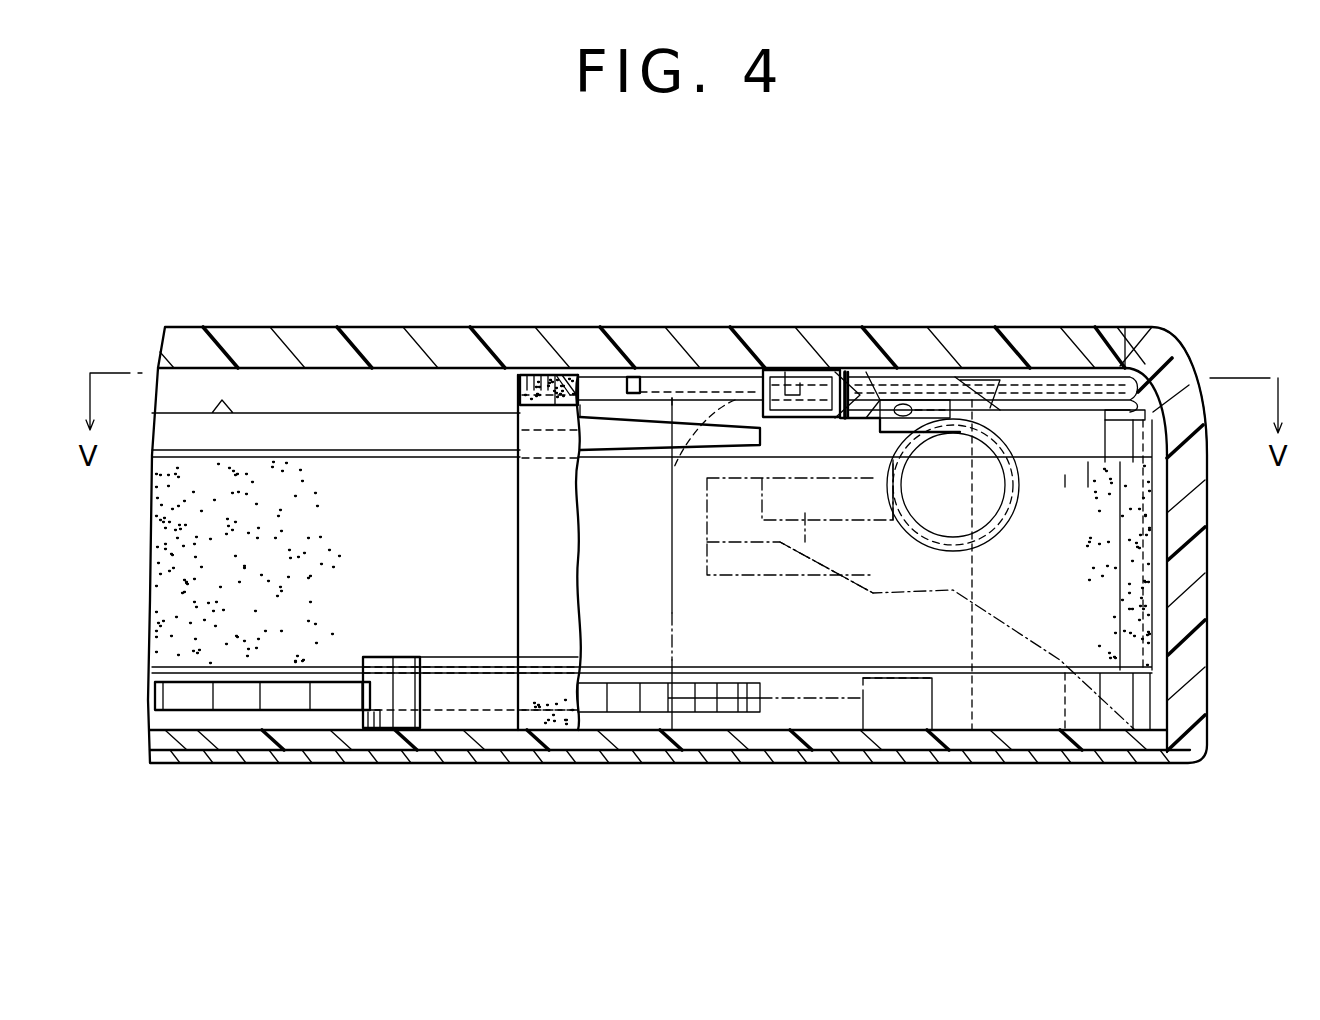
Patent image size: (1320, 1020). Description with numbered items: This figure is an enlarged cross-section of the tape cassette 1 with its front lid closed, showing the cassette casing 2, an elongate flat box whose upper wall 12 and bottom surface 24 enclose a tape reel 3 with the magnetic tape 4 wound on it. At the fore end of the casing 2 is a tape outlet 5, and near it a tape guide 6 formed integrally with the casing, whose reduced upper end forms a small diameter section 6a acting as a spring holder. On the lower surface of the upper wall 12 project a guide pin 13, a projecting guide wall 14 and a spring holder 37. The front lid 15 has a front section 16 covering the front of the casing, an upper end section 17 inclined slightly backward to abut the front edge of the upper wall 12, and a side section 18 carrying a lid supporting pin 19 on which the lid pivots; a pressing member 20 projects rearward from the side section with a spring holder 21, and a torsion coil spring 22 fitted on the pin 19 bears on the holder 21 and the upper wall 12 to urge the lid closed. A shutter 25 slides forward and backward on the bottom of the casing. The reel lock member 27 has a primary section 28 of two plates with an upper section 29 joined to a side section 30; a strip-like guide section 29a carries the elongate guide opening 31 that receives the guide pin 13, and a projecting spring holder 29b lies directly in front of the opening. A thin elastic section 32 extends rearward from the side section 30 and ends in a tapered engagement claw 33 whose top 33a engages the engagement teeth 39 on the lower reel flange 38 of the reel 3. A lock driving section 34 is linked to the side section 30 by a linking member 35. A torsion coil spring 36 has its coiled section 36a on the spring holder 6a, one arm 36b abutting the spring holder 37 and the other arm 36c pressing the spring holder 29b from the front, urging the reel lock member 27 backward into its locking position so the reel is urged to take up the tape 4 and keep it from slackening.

The apparatus housing 1 is at (1160, 239).
The cassette casing 2 is at (368, 327).
The tape reel 3 is at (268, 413).
The magnetic tape 4 is at (210, 565).
The tape outlet 5 is at (1118, 730).
The tape guide 6 is at (1150, 688).
The small diameter section 6a is at (1145, 375).
The upper wall 12 is at (762, 345).
The guide pin 13 is at (742, 400).
The projecting guide wall 14 is at (648, 372).
The front lid 15 is at (1208, 540).
The front section 16 is at (1208, 578).
The upper end section 17 is at (1132, 327).
The side section 18 is at (868, 580).
The lid supporting pin 19 is at (1000, 520).
The pressing member 20 is at (707, 518).
The spring holder 21 is at (805, 513).
The torsion coil spring 22 is at (985, 540).
The bottom surface 24 is at (830, 740).
The shutter 25 is at (758, 752).
The reel lock member 27 is at (518, 528).
The primary section 28 is at (532, 375).
The upper section 29 is at (585, 378).
The guide section 29a is at (866, 372).
The projecting spring holder 29b is at (880, 428).
The side section 30 is at (535, 490).
The guide opening 31 is at (633, 377).
The elastic section 32 is at (440, 657).
The engagement claw 33 is at (393, 657).
The top of engagement claw 33a is at (362, 728).
The lock driving section 34 is at (935, 700).
The linking member 35 is at (775, 698).
The torsion coil spring 36 is at (1138, 400).
The coiled section 36a is at (1143, 413).
The arm 36b is at (832, 372).
The arm 36c is at (906, 398).
The spring holder 37 is at (785, 372).
The lower reel flange 38 is at (232, 710).
The engagement teeth 39 is at (172, 705).